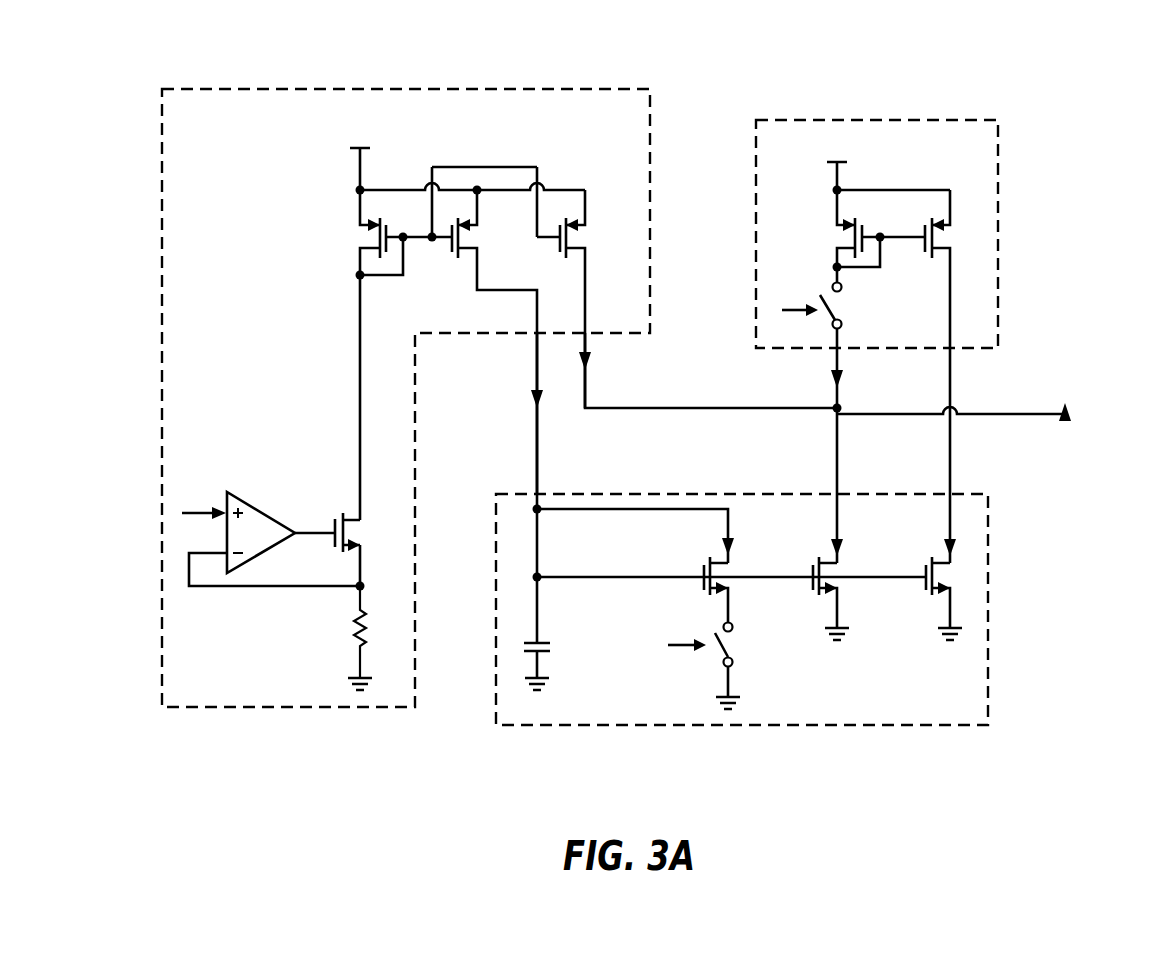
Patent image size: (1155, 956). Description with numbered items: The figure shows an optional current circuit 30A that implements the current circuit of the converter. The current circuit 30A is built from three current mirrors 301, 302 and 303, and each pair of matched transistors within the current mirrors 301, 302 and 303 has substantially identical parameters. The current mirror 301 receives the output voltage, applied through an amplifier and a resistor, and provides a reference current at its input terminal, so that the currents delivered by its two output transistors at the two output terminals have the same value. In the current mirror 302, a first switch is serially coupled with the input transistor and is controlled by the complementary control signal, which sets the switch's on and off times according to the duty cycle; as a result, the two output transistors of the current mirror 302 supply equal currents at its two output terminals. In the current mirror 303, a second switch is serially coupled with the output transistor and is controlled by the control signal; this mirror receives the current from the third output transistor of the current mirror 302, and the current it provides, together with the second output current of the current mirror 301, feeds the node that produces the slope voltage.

The current circuit 30A is at (808, 50).
The current mirror 301 is at (305, 89).
The current mirror 302 is at (738, 725).
The current mirror 303 is at (1000, 236).